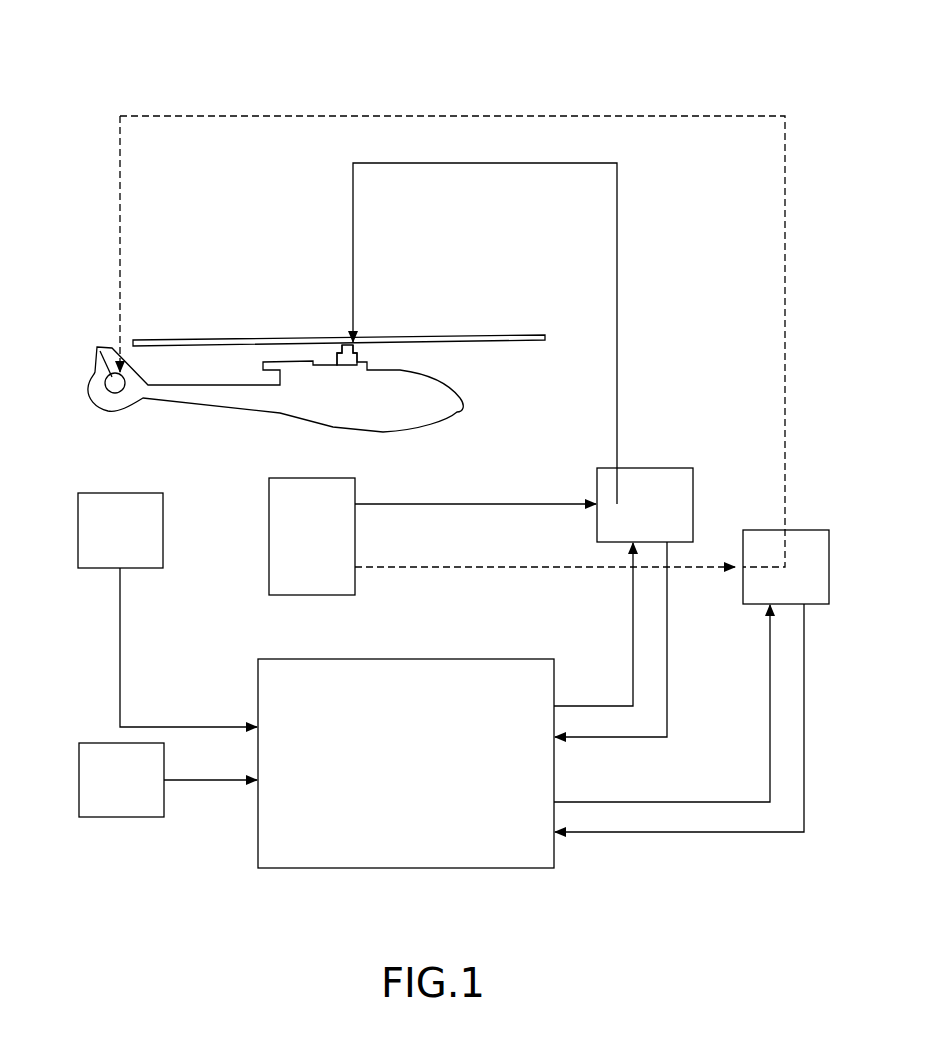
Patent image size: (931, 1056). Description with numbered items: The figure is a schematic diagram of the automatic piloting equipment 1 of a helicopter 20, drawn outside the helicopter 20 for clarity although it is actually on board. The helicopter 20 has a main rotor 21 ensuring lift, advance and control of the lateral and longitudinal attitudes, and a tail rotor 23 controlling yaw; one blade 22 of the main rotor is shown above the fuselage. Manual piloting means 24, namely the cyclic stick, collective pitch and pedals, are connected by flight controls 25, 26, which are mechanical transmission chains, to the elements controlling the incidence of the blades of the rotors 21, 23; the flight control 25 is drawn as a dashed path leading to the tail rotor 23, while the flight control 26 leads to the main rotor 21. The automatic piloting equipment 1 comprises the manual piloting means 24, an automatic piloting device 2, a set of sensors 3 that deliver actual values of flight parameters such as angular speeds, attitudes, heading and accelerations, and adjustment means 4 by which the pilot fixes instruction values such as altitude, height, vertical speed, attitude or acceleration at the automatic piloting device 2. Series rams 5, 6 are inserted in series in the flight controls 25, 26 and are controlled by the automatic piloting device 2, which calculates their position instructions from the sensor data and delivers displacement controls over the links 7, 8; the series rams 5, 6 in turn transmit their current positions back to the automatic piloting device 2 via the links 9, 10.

The automatic piloting equipment 1 is at (267, 882).
The automatic piloting device 2 is at (480, 802).
The set of sensors 3 is at (132, 785).
The adjustment means 4 is at (110, 535).
The series ram 5 is at (765, 530).
The series ram 6 is at (680, 468).
The link 7 is at (633, 598).
The link 8 is at (712, 803).
The link 9 is at (667, 662).
The link 10 is at (730, 833).
The helicopter 20 is at (437, 392).
The main rotor 21 is at (341, 343).
The rotor blade 22 is at (482, 337).
The tail rotor 23 is at (95, 348).
The manual piloting means 24 is at (299, 512).
The flight control 25 is at (638, 115).
The flight control 26 is at (617, 259).